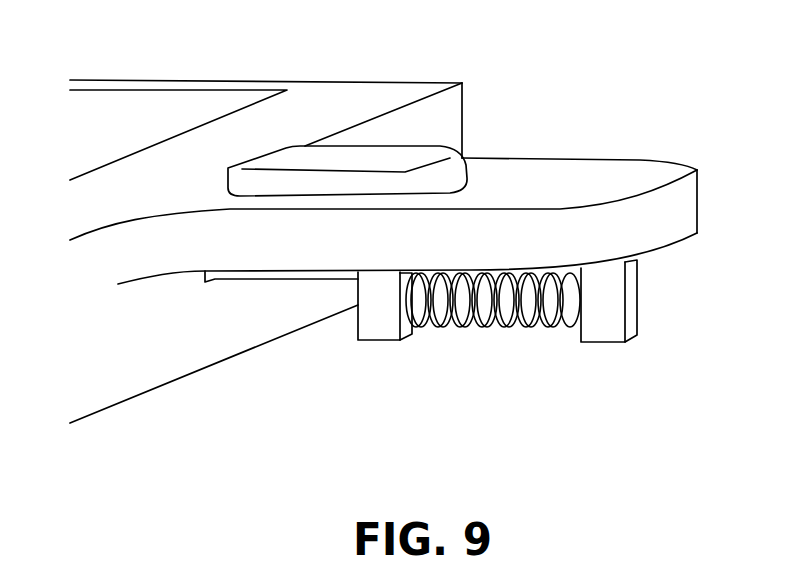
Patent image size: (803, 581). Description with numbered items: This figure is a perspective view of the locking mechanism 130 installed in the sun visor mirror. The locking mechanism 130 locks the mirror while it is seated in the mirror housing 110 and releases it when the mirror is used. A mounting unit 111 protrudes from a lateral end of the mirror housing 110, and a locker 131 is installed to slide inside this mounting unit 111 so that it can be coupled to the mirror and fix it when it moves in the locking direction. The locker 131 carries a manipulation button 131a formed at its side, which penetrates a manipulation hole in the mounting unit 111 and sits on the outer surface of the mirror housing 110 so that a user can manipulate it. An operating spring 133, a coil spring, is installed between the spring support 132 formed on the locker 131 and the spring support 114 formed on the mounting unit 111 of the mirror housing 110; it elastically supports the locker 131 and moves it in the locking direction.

The mirror housing 110 is at (150, 355).
The mounting unit 111 is at (517, 230).
The spring support 114 is at (610, 323).
The locking mechanism 130 is at (521, 356).
The locker 131 is at (291, 273).
The manipulation button 131a is at (410, 157).
The spring support 132 is at (375, 328).
The operating spring 133 is at (467, 322).